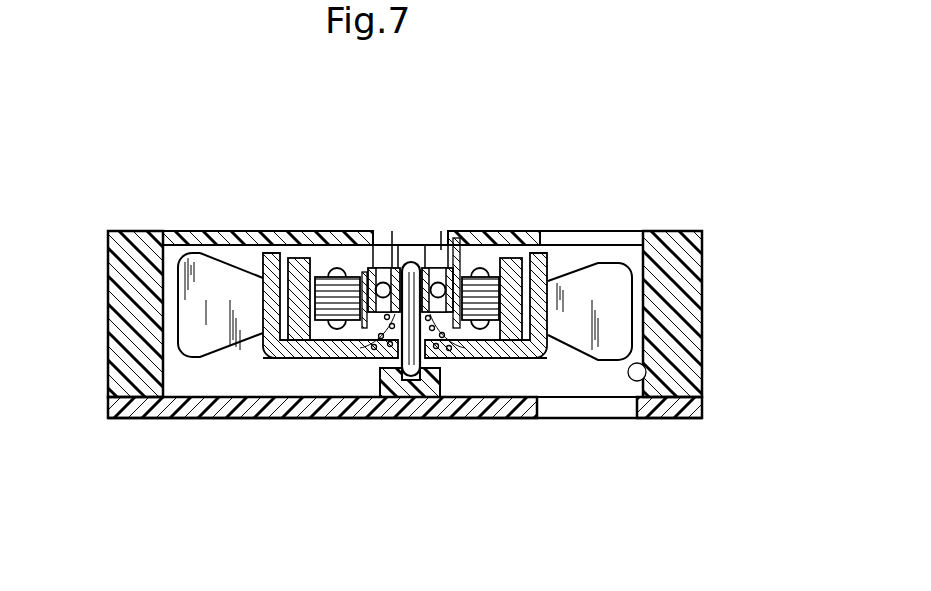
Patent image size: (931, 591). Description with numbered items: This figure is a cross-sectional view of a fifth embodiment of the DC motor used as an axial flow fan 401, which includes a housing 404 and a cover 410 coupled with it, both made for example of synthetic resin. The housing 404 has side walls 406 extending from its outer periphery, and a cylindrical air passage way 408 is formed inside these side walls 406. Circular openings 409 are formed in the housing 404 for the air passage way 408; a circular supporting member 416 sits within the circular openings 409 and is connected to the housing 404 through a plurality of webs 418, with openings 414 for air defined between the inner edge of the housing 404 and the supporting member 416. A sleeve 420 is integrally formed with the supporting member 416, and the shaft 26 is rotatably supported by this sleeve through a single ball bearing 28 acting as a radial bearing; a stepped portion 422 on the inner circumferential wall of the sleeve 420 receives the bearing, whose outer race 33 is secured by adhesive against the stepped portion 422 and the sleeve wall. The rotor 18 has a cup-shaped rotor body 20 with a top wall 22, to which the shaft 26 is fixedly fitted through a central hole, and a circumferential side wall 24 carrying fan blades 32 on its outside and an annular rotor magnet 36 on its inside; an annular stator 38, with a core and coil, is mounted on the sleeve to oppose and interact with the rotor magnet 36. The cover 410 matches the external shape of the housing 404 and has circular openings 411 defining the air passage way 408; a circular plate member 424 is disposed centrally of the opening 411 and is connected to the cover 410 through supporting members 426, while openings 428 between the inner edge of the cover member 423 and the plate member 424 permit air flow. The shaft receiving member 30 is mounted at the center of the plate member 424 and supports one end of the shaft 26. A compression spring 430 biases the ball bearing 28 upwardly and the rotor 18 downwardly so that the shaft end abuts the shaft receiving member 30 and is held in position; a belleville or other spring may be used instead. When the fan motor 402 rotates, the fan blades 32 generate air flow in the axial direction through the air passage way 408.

The rotor 18 is at (577, 237).
The rotor body 20 is at (245, 263).
The top wall 22 is at (313, 363).
The circumferential side wall 24 is at (268, 362).
The shaft 26 is at (412, 260).
The ball bearing 28 is at (380, 258).
The shaft receiving member 30 is at (423, 400).
The fan blades 32 is at (200, 358).
The outer race 33 is at (488, 358).
The rotor magnet 36 is at (296, 250).
The stator 38 is at (322, 262).
The axial flow fan 401 is at (702, 326).
The fan motor 402 is at (557, 362).
The housing 404 is at (113, 233).
The side walls 406 is at (106, 318).
The air passage way 408 is at (647, 377).
The circular openings 409 is at (637, 237).
The cover 410 is at (527, 424).
The circular openings 411 is at (638, 420).
The openings 414 is at (615, 235).
The supporting member 416 is at (523, 235).
The webs 418 is at (192, 233).
The sleeve 420 is at (487, 237).
The stepped portion 422 is at (456, 237).
The cover member 423 is at (688, 420).
The plate member 424 is at (380, 418).
The supporting members 426 is at (213, 418).
The openings 428 is at (542, 403).
The compression spring 430 is at (362, 355).